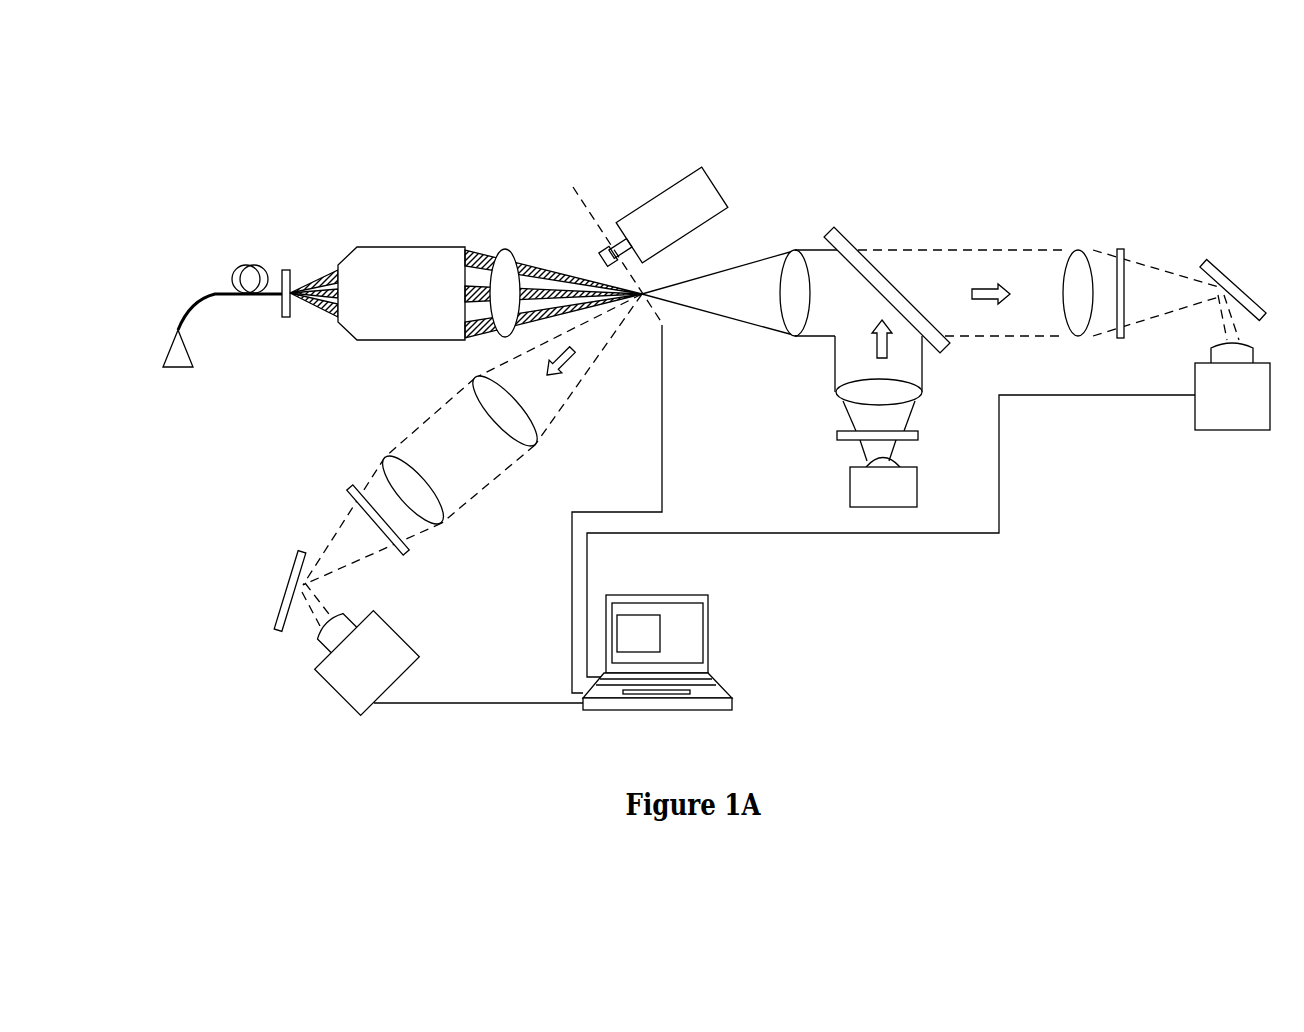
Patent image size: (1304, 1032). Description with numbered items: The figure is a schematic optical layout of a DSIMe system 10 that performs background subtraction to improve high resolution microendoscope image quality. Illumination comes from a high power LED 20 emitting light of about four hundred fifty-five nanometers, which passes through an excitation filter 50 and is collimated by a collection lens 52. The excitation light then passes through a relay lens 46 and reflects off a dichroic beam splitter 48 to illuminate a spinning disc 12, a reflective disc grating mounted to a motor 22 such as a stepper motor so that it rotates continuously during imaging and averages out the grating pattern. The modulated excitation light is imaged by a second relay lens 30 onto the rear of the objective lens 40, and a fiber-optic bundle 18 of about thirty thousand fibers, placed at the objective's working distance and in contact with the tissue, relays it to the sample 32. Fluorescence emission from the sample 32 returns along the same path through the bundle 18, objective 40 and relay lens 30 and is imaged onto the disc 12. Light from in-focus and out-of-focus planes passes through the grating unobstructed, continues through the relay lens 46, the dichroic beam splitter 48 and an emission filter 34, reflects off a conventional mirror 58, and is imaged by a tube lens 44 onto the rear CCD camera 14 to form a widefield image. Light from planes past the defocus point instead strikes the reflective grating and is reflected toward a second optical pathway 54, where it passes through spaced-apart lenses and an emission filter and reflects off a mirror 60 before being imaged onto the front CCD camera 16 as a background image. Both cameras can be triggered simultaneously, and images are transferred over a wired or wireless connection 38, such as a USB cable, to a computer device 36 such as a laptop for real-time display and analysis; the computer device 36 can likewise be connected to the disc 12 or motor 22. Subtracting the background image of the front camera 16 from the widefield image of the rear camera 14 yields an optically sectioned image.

The system 10 is at (380, 205).
The spinning disc 12 is at (590, 205).
The rear CCD camera 14 is at (1228, 431).
The front CCD camera 16 is at (336, 690).
The fiber-optic bundle 18 is at (233, 277).
The LED 20 is at (880, 507).
The motor 22 is at (722, 186).
The relay lens 30 is at (505, 250).
The sample 32 is at (170, 350).
The emission filter 34 is at (1123, 252).
The computer device 36 is at (732, 700).
The connection 38 is at (999, 515).
The objective lens 40 is at (373, 341).
The tube lens 44 is at (1077, 250).
The lens 46 is at (797, 250).
The dichroic beam splitter 48 is at (887, 275).
The excitation filter 50 is at (920, 434).
The collection lens 52 is at (922, 393).
The second optical pathway 54 is at (562, 360).
The mirror 58 is at (1228, 282).
The mirror 60 is at (283, 607).